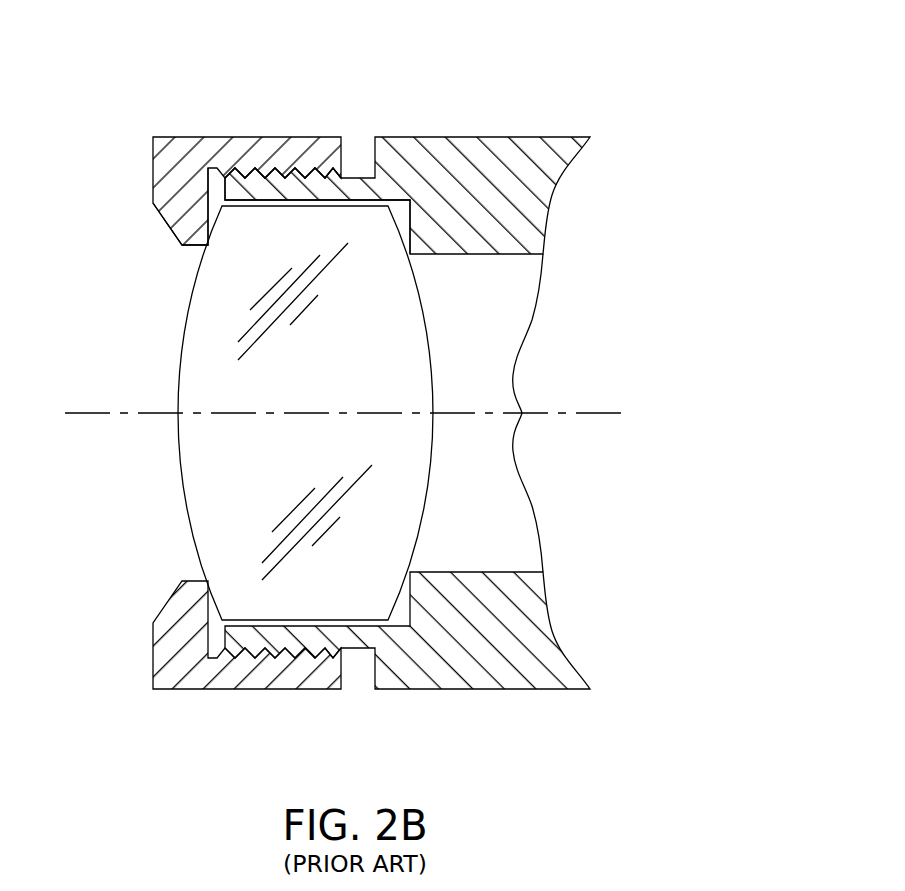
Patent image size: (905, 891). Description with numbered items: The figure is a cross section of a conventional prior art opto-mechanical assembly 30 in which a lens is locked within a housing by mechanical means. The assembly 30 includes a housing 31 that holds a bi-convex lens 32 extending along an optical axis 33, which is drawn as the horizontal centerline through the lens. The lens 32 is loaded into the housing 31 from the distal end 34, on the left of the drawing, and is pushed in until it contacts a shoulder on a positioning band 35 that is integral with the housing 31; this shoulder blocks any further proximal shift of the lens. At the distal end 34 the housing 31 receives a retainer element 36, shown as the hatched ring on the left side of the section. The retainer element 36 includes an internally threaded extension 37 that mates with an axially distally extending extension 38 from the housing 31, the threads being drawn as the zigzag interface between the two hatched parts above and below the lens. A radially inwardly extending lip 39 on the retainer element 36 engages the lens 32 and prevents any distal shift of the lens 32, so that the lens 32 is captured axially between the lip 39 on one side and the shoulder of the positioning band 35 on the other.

The opto-mechanical assembly 30 is at (205, 88).
The housing 31 is at (485, 167).
The bi-convex lens 32 is at (220, 307).
The optical axis 33 is at (128, 412).
The distal end 34 is at (223, 637).
The positioning band 35 is at (517, 592).
The retainer element 36 is at (187, 136).
The internally threaded extension 37 is at (272, 145).
The axially distally extending extension 38 is at (326, 188).
The radially inwardly extending lip 39 is at (170, 190).